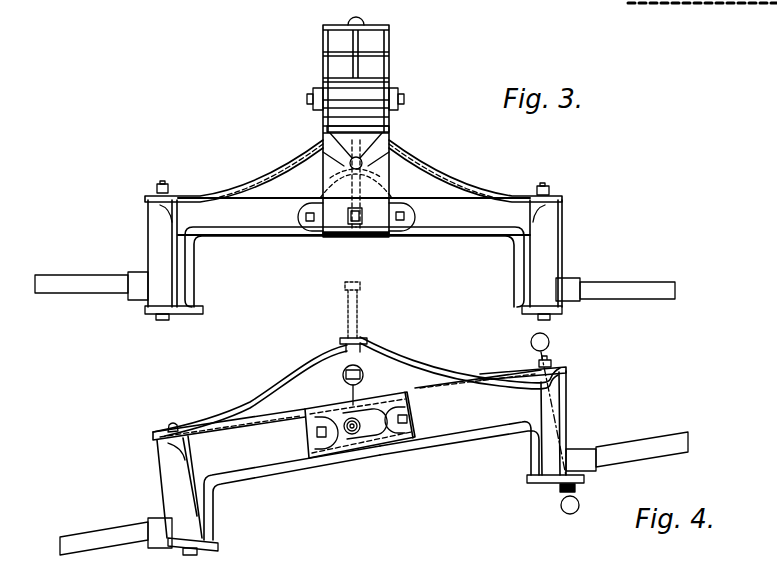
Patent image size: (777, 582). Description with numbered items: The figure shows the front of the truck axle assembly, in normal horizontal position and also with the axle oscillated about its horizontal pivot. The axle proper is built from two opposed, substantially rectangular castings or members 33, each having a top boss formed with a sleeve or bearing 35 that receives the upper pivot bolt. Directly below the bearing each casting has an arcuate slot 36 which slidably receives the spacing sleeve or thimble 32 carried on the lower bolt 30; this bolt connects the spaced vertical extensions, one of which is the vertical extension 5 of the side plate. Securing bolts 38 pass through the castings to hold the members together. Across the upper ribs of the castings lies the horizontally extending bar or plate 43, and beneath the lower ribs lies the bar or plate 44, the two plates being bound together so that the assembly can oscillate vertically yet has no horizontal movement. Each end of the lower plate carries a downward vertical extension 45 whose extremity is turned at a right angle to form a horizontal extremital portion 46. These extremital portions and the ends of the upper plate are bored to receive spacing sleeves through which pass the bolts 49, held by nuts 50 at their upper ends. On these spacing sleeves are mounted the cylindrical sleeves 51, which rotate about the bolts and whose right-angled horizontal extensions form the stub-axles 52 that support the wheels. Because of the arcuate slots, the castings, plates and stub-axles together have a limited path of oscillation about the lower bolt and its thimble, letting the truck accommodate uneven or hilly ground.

In FIG. 3, the vertical extension 5 is at (385, 237).
In FIG. 4, the vertical extension 5 is at (555, 423).
In FIG. 3, the lower bolt 30 is at (354, 226).
In FIG. 4, the lower bolt 30 is at (318, 437).
In FIG. 4, the spacing sleeve or thimble 32 is at (348, 434).
In FIG. 4, the axle member or casting 33 is at (420, 398).
In FIG. 4, the sleeve or bearing 35 is at (377, 370).
In FIG. 4, the arcuate slot 36 is at (376, 428).
In FIG. 3, the securing bolt 38 is at (305, 218).
In FIG. 4, the securing bolt 38 is at (411, 418).
In FIG. 3, the upper bar or plate 43 is at (198, 195).
In FIG. 4, the upper bar or plate 43 is at (359, 388).
In FIG. 3, the lower bar or plate 44 is at (270, 240).
In FIG. 4, the lower bar or plate 44 is at (462, 432).
In FIG. 3, the downward vertical extension 45 is at (516, 270).
In FIG. 4, the downward vertical extension 45 is at (532, 463).
In FIG. 3, the horizontal extremital portion 46 is at (197, 309).
In FIG. 4, the horizontal extremital portion 46 is at (547, 502).
In FIG. 3, the bolt 49 is at (160, 321).
In FIG. 4, the bolt 49 is at (205, 552).
In FIG. 3, the nut 50 is at (162, 184).
In FIG. 4, the nut 50 is at (177, 427).
In FIG. 3, the sleeve or cylindrical member 51 is at (157, 232).
In FIG. 4, the sleeve or cylindrical member 51 is at (180, 515).
In FIG. 3, the stub-axle 52 is at (85, 290).
In FIG. 4, the stub-axle 52 is at (68, 550).